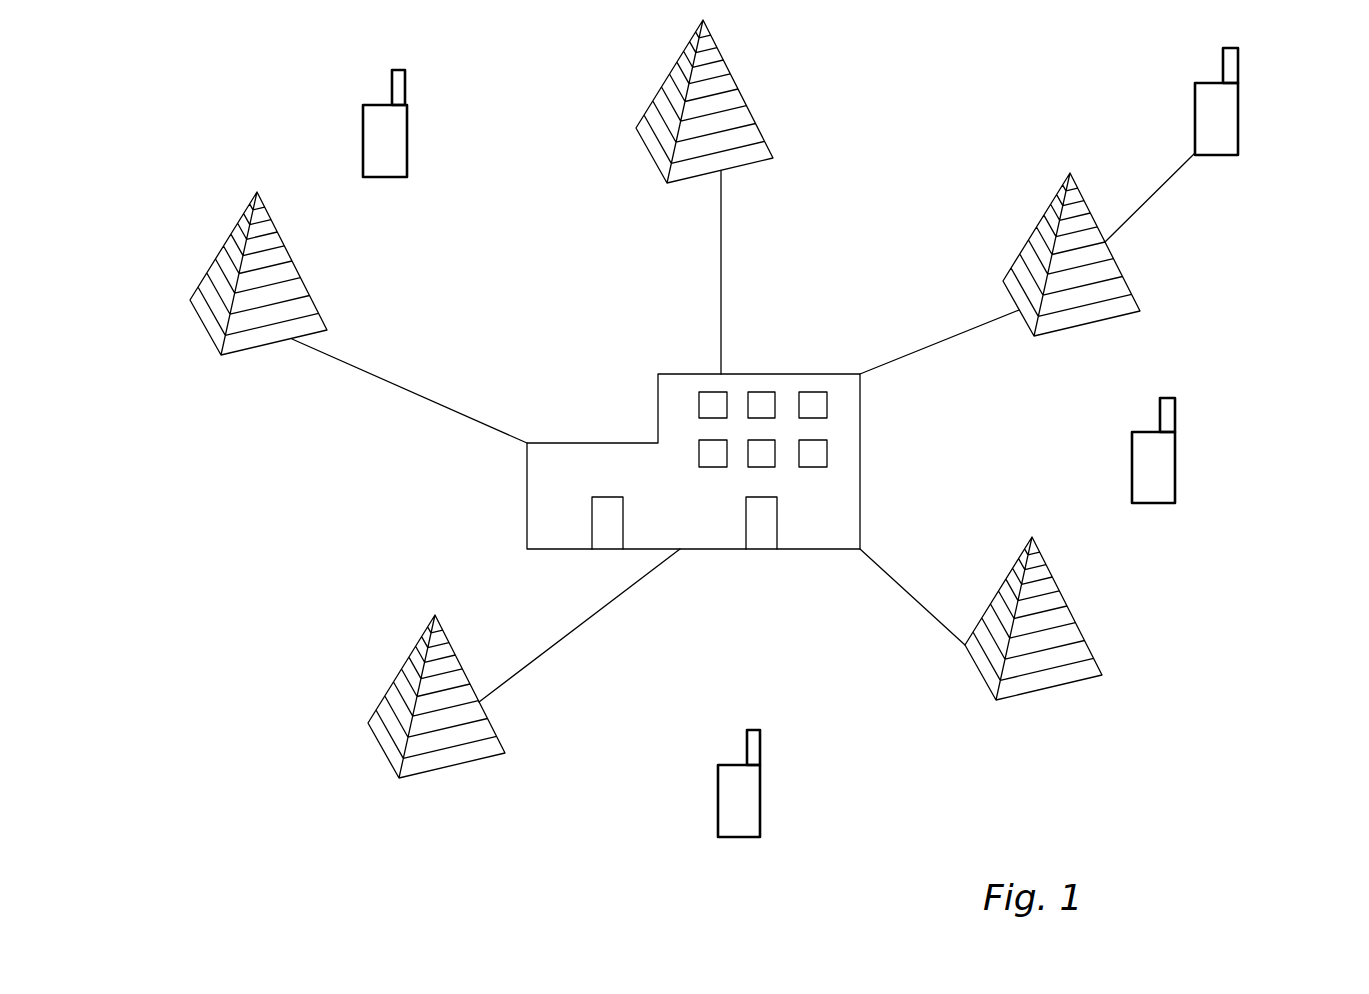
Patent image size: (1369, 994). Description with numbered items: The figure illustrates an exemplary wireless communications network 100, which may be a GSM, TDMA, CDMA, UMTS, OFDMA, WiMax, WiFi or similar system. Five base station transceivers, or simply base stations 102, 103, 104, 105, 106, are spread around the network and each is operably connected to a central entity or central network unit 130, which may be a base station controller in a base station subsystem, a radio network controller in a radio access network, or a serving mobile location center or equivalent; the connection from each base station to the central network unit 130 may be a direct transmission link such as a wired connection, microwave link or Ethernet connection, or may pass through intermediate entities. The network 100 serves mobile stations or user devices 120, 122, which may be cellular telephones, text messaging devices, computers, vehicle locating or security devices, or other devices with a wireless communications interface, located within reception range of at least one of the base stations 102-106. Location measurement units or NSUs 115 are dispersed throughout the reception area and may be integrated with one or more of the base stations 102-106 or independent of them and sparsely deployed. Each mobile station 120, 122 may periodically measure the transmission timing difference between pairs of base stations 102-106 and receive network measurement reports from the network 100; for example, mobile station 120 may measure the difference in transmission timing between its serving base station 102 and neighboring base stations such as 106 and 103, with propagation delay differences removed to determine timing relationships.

The wireless communications network 100 is at (165, 107).
The base station 102 is at (706, 101).
The base station 103 is at (1071, 267).
The base station 104 is at (1033, 629).
The base station 105 is at (436, 715).
The base station 106 is at (258, 292).
The NSU 115 is at (1240, 115).
The mobile station 120 is at (408, 138).
The mobile station 122 is at (762, 797).
The central network unit 130 is at (860, 495).